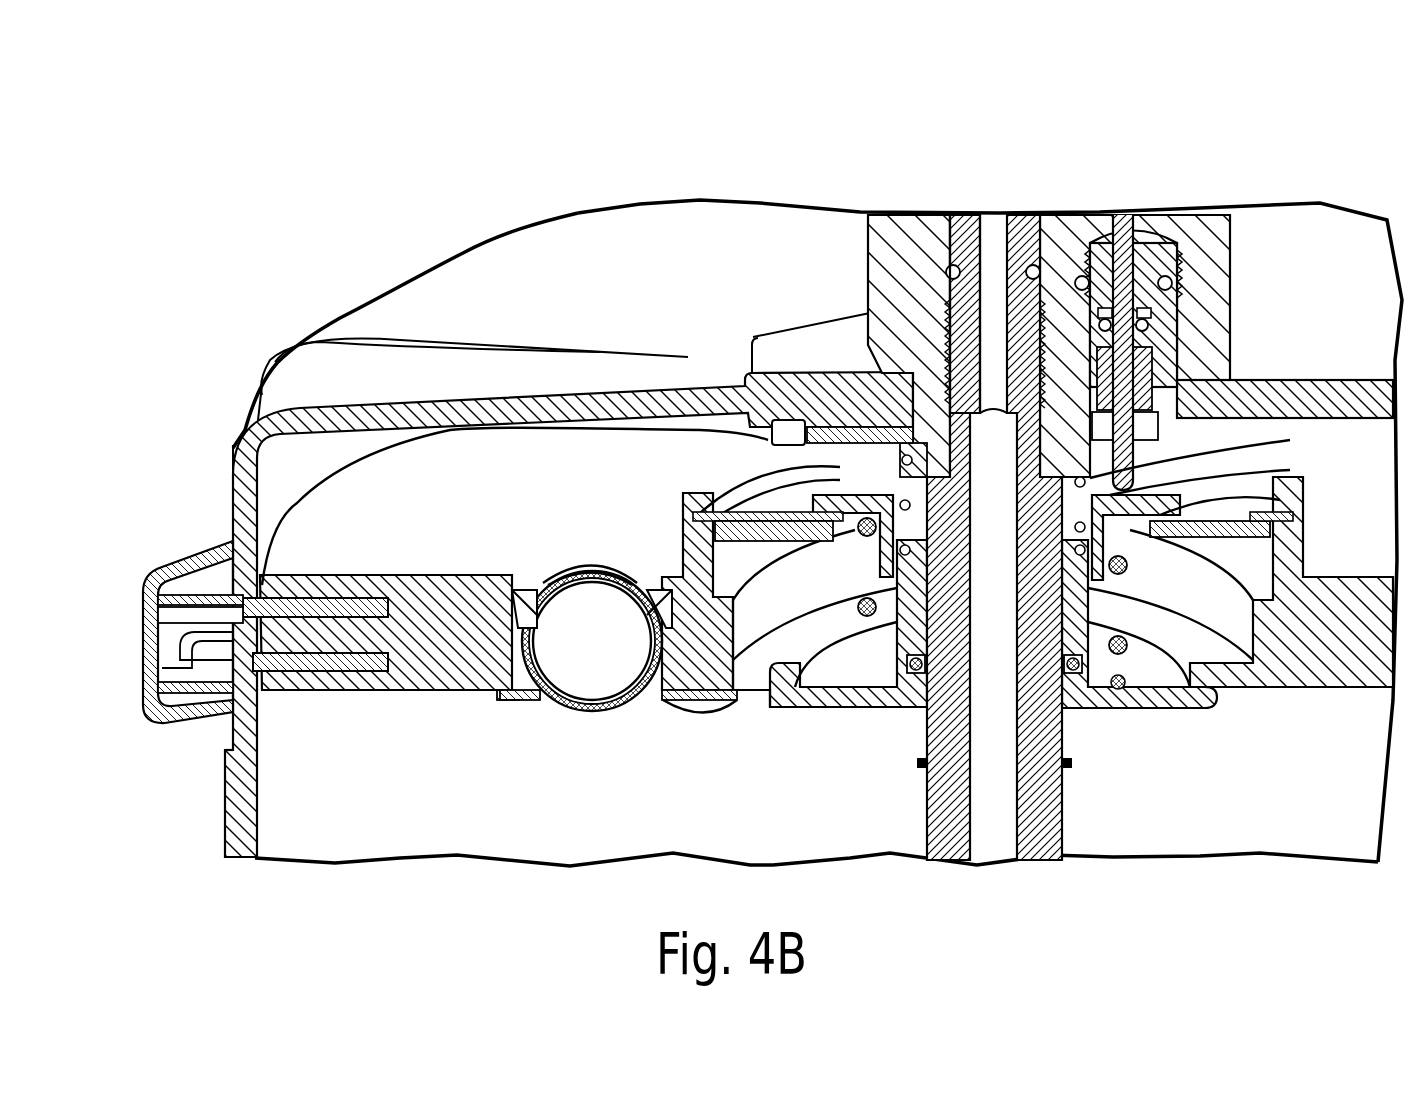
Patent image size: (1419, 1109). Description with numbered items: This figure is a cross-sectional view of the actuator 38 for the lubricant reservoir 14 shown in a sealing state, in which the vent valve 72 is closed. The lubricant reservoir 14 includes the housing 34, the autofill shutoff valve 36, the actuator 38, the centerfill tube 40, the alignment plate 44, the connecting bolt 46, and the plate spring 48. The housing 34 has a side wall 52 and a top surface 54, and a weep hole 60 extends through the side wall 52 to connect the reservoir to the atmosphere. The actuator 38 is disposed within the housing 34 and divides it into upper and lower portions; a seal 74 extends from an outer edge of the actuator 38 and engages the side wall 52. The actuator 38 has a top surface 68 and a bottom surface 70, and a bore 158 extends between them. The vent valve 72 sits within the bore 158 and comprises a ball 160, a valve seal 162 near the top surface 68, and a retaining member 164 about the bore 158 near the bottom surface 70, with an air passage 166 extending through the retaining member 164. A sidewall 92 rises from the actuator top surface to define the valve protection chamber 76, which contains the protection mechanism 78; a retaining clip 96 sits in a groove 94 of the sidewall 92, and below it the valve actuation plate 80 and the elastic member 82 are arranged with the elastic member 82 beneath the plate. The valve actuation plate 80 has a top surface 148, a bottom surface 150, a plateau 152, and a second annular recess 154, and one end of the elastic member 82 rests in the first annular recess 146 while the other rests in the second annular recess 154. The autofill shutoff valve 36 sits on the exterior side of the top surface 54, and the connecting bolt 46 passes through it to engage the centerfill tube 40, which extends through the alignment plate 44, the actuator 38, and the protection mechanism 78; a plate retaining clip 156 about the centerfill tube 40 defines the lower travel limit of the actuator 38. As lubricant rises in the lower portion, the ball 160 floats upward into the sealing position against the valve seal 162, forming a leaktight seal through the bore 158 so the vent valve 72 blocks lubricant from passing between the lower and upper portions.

The lubricant reservoir 14 is at (318, 152).
The housing 34 is at (268, 354).
The autofill shutoff valve 36 is at (912, 250).
The actuator 38 is at (360, 692).
The centerfill tube 40 is at (1068, 812).
The alignment plate 44 is at (873, 433).
The connecting bolt 46 is at (1018, 230).
The plate spring 48 is at (850, 483).
The side wall 52 is at (255, 795).
The top surface 54 is at (551, 330).
The weep hole 60 is at (240, 622).
The top surface 68 is at (721, 614).
The bottom surface 70 is at (317, 692).
The vent valve 72 is at (630, 720).
The seal 74 is at (240, 600).
The valve protection chamber 76 is at (777, 668).
The protection mechanism 78 is at (847, 556).
The valve actuation plate 80 is at (1262, 580).
The elastic member 82 is at (1098, 645).
The sidewall 92 is at (1292, 470).
The groove 94 is at (1255, 525).
The retaining clip 96 is at (1257, 495).
The first annular recess 146 is at (1153, 668).
The top surface 148 is at (1253, 510).
The bottom surface 150 is at (1212, 540).
The plateau 152 is at (775, 432).
The second annular recess 154 is at (836, 520).
The plate retaining clip 156 is at (917, 763).
The bore 158 is at (508, 663).
The ball 160 is at (593, 713).
The valve seal 162 is at (523, 588).
The retaining member 164 is at (497, 693).
The air passage 166 is at (520, 702).